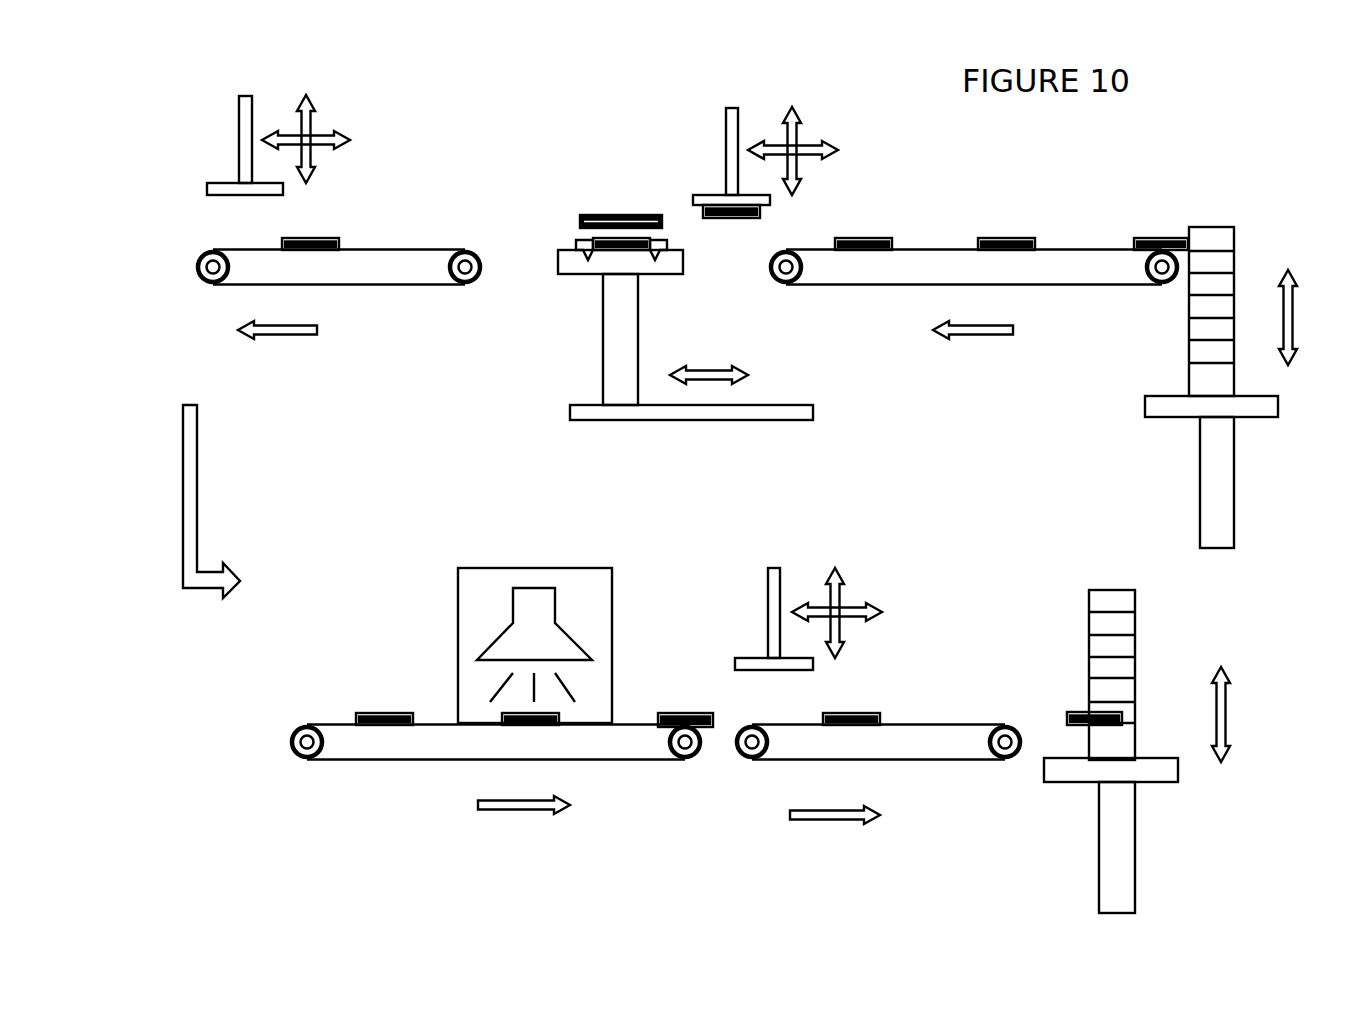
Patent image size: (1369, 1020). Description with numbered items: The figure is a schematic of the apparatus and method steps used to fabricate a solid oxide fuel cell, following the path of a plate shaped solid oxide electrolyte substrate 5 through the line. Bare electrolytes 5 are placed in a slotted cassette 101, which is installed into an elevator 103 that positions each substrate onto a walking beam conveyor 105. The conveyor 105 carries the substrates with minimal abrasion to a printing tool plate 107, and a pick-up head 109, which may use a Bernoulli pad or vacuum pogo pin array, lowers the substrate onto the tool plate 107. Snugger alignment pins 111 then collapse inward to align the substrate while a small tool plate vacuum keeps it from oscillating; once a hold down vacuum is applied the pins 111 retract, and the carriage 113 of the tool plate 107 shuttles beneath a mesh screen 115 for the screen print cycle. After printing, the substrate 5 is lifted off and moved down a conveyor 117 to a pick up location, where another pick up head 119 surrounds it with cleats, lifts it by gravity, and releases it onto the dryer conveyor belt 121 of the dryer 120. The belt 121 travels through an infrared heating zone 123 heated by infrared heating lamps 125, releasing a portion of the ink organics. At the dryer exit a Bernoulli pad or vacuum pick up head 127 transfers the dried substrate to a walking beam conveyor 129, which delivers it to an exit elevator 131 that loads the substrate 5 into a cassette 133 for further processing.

The solid oxide electrolyte substrate 5 is at (624, 254).
The slotted cassette 101 is at (1213, 226).
The elevator 103 is at (1143, 414).
The walking beam conveyor 105 is at (1087, 291).
The printing tool plate 107 is at (570, 277).
The pick-up head 109 is at (718, 192).
The snugger alignment pins 111 is at (578, 246).
The carriage 113 is at (603, 374).
The mesh screen 115 is at (622, 214).
The conveyor 117 is at (391, 290).
The pick up head 119 is at (213, 178).
The dryer 120 is at (399, 591).
The dryer conveyor belt 121 is at (369, 748).
The infrared heating zone 123 is at (582, 613).
The infrared heating lamp 125 is at (541, 589).
The pick up head 127 is at (779, 565).
The walking beam conveyor 129 is at (942, 756).
The exit elevator 131 is at (1063, 784).
The cassette 133 is at (1087, 599).